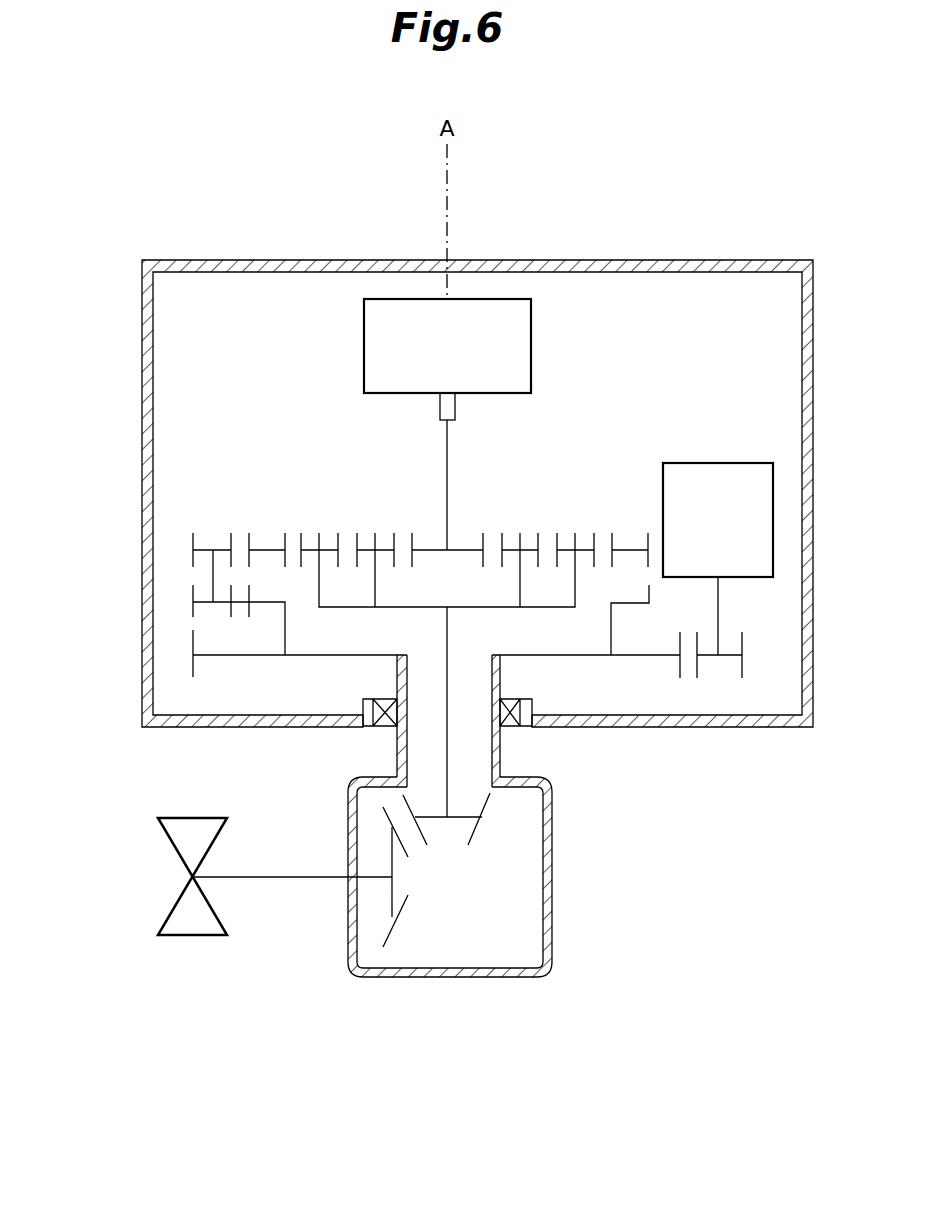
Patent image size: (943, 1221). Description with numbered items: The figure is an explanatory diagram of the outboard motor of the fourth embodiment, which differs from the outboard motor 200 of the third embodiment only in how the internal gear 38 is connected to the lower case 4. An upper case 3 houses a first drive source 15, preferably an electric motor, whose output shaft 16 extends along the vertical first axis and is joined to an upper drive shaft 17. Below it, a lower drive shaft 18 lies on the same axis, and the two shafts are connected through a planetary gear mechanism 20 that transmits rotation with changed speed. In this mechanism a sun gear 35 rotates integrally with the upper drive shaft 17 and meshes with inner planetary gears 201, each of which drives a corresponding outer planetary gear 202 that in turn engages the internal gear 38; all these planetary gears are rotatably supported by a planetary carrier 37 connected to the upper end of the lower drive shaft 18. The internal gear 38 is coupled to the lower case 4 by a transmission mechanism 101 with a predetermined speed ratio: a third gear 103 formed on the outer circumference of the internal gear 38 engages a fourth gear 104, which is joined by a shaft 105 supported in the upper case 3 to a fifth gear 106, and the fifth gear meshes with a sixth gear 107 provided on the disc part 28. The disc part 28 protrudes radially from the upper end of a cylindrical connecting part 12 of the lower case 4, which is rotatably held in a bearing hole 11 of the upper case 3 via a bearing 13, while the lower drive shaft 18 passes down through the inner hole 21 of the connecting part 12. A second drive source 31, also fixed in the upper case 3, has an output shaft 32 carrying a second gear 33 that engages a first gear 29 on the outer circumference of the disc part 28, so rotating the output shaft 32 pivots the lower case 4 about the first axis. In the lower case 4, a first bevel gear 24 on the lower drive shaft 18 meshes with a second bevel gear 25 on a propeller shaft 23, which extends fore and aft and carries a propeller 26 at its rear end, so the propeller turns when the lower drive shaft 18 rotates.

The outboard motor 200 is at (175, 247).
The upper case 3 is at (727, 258).
The first drive source 15 is at (505, 299).
The output shaft 16 is at (456, 408).
The upper drive shaft 17 is at (449, 452).
The planetary gear mechanism 20 is at (273, 451).
The sun gear 35 is at (428, 540).
The inner planetary gears 201 is at (365, 540).
The outer planetary gears 202 is at (302, 538).
The internal gear 38 is at (300, 538).
The planetary carrier 37 is at (484, 610).
The third gear 103 is at (240, 538).
The transmission mechanism 101 is at (182, 535).
The fourth gear 104 is at (203, 546).
The shaft 105 is at (207, 577).
The fifth gear 106 is at (200, 618).
The sixth gear 107 is at (249, 618).
The lower drive shaft 18 is at (440, 652).
The second drive source 31 is at (728, 463).
The output shaft 32 is at (722, 607).
The first gear 29 is at (672, 668).
The second gear 33 is at (742, 668).
The connecting part 12 is at (505, 678).
The disc part 28 is at (223, 657).
The bearing hole 11 is at (392, 733).
The bearing 13 is at (510, 732).
The lower case 4 is at (527, 977).
The inner hole 21 is at (483, 765).
The first bevel gear 24 is at (470, 838).
The second bevel gear 25 is at (398, 918).
The propeller shaft 23 is at (282, 877).
The propeller 26 is at (195, 932).